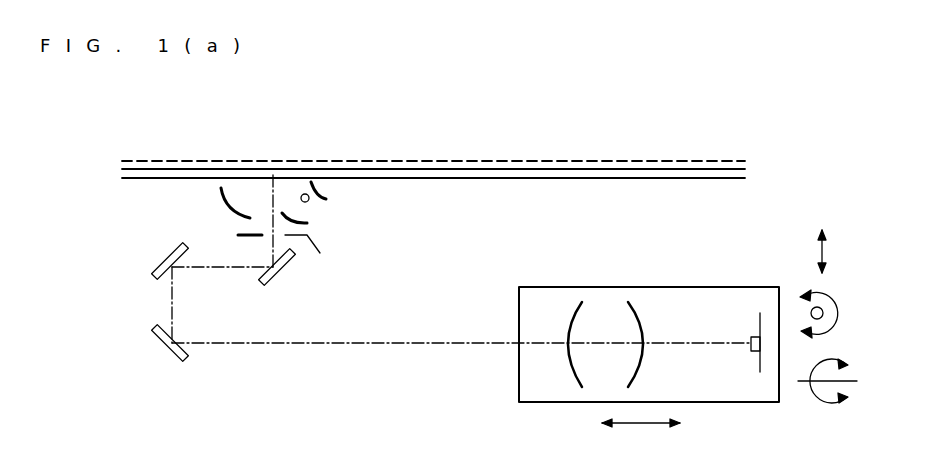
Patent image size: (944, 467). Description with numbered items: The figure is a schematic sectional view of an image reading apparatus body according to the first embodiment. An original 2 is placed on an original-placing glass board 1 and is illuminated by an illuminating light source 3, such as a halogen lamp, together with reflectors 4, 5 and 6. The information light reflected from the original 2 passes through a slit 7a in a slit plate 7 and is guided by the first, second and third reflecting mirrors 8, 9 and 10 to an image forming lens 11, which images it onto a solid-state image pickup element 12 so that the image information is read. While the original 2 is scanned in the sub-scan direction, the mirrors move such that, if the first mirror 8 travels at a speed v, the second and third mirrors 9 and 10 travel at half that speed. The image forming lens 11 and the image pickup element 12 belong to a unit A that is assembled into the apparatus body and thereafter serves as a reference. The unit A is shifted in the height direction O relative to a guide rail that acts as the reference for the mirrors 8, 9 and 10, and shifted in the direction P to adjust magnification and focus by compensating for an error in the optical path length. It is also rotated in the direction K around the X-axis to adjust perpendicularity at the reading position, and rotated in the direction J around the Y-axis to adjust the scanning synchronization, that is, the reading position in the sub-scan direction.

The original-placing glass board 1 is at (492, 168).
The original 2 is at (603, 160).
The illuminating light source 3 is at (309, 202).
The reflector 4 is at (325, 186).
The reflector 5 is at (282, 213).
The reflector 6 is at (221, 188).
The slit plate 7 is at (320, 253).
The slit 7a is at (264, 238).
The first reflecting mirror 8 is at (285, 278).
The second reflecting mirror 9 is at (158, 253).
The third reflecting mirror 10 is at (166, 351).
The image forming lens 11 is at (572, 369).
The solid-state image pickup element 12 is at (751, 337).
The unit A is at (665, 287).
The direction P is at (635, 425).
The direction O is at (820, 255).
The rotating direction J is at (835, 302).
The rotating direction K is at (838, 399).